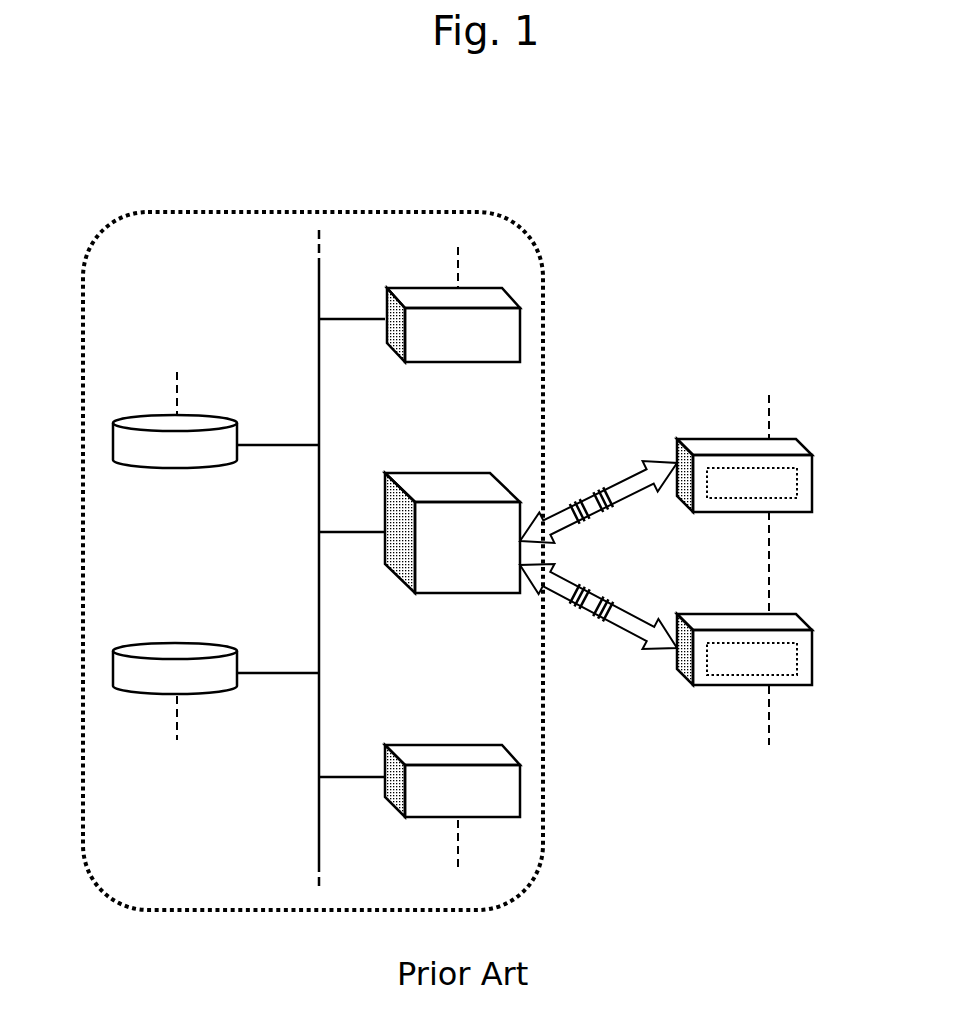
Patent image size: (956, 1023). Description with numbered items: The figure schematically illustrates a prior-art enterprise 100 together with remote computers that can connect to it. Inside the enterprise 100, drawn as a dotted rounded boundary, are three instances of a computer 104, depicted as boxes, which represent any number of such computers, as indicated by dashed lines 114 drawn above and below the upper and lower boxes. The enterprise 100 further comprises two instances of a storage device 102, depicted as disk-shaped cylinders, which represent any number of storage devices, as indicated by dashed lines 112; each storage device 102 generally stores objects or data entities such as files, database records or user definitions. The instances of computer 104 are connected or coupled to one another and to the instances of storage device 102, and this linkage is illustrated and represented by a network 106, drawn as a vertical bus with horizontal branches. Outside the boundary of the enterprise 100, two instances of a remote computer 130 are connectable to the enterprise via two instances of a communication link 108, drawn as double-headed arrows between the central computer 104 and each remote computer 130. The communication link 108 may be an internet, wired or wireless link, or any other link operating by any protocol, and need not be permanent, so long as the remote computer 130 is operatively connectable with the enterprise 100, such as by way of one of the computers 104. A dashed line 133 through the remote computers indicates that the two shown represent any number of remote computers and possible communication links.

The enterprise 100 is at (375, 182).
The storage device 102 is at (200, 467).
The computer 104 is at (485, 362).
The network 106 is at (258, 444).
The communication link 108 is at (579, 492).
The dashed lines 112 is at (178, 398).
The dashed lines 114 is at (457, 272).
The remote computer 130 is at (717, 438).
The dashed line 133 is at (768, 708).